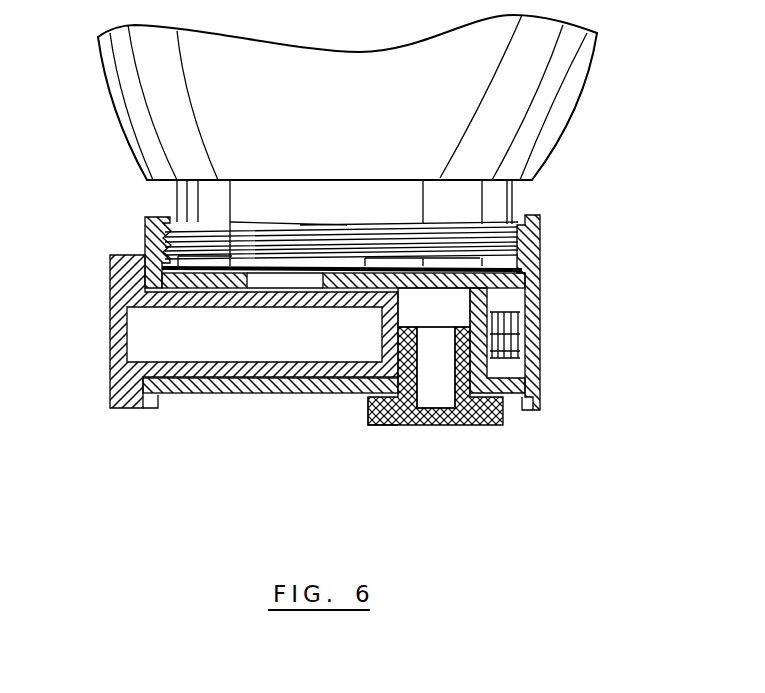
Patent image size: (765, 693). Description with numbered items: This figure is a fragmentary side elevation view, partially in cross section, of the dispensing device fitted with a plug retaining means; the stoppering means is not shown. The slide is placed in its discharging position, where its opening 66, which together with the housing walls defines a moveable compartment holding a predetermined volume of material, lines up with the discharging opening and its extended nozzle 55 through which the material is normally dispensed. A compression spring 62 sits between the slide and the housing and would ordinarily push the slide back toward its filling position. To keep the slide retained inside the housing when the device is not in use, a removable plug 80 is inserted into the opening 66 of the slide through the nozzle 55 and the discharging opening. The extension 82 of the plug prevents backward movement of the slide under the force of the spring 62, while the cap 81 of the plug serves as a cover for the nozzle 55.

The nozzle 55 is at (392, 397).
The compression spring 62 is at (513, 338).
The opening 66 is at (438, 310).
The removable plug 80 is at (452, 415).
The cap 81 is at (369, 408).
The extension 82 is at (437, 372).